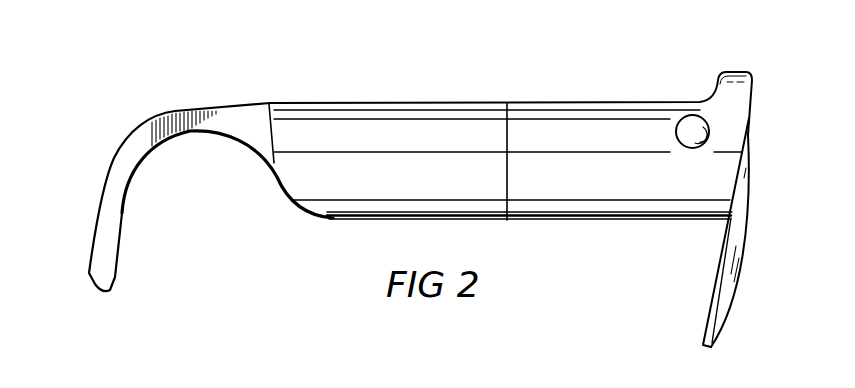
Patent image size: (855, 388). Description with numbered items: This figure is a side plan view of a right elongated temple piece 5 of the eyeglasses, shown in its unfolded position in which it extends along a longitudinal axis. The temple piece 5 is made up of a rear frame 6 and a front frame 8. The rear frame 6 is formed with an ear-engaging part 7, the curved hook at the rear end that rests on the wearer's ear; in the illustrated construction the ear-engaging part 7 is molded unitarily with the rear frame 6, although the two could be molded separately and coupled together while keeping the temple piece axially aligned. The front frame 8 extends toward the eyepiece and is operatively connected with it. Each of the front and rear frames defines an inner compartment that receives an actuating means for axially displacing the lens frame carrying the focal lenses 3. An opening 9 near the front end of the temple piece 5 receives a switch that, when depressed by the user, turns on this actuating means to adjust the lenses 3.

The focal lenses 3 is at (733, 278).
The temple piece 5 is at (537, 82).
The rear frame 6 is at (356, 186).
The ear-engaging part 7 is at (234, 119).
The front frame 8 is at (654, 182).
The opening 9 is at (682, 122).